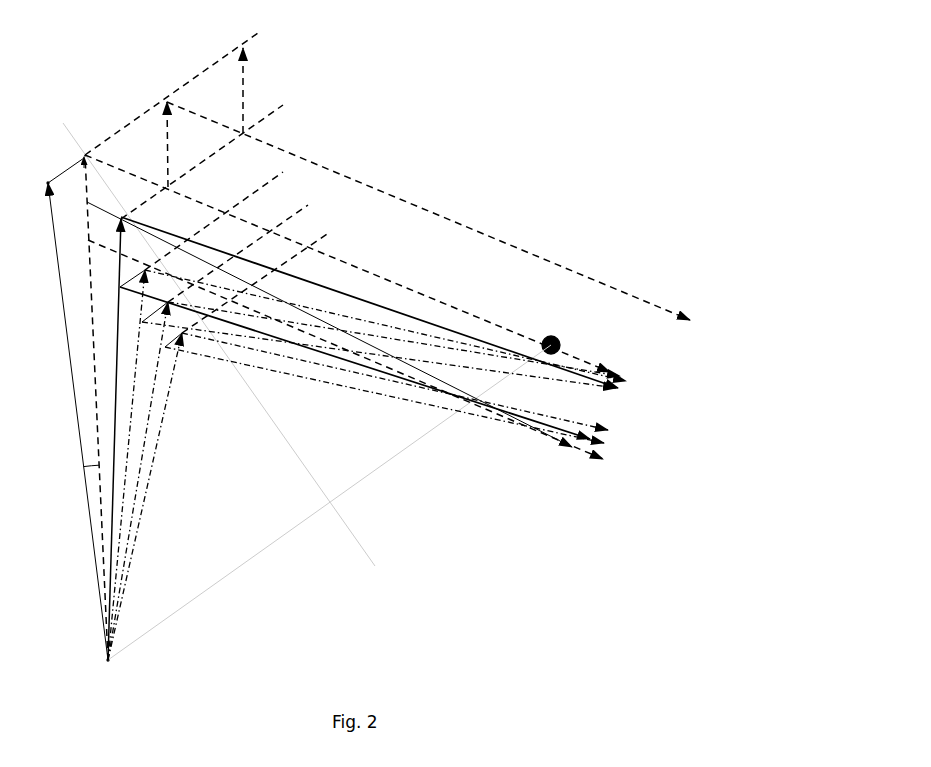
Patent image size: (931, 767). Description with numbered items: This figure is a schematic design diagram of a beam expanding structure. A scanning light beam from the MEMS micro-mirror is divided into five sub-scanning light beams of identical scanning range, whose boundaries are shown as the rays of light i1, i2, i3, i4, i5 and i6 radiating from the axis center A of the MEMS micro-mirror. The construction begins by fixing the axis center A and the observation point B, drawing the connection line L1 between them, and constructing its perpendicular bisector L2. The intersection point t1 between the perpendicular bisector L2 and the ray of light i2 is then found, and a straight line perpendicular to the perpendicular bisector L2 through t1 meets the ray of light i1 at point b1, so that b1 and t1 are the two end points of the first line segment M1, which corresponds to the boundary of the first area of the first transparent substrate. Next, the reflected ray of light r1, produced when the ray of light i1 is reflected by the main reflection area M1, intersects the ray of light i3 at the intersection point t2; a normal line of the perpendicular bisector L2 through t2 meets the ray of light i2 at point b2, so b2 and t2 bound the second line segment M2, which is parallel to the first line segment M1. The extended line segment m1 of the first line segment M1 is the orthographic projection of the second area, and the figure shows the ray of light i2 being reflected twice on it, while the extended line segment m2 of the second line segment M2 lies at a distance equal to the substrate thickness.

The axis center of the MEMS micro-mirror A is at (99, 672).
The observation point B is at (556, 338).
The connection line L1 is at (329, 502).
The perpendicular bisector L2 is at (219, 344).
The ray of light i1 is at (78, 421).
The ray of light i2 is at (95, 407).
The ray of light i3 is at (349, 439).
The ray of light i4 is at (367, 416).
The ray of light i5 is at (364, 432).
The ray of light i6 is at (358, 446).
The intersection point b1 is at (35, 190).
The intersection point b2 is at (334, 349).
The reflected ray of light r1 is at (66, 181).
The first line segment M1 is at (65, 162).
The second line segment M2 is at (352, 301).
The intersection point t1 is at (347, 202).
The intersection point t2 is at (329, 276).
The extended line segment m1 is at (408, 203).
The extended line segment m2 is at (209, 103).